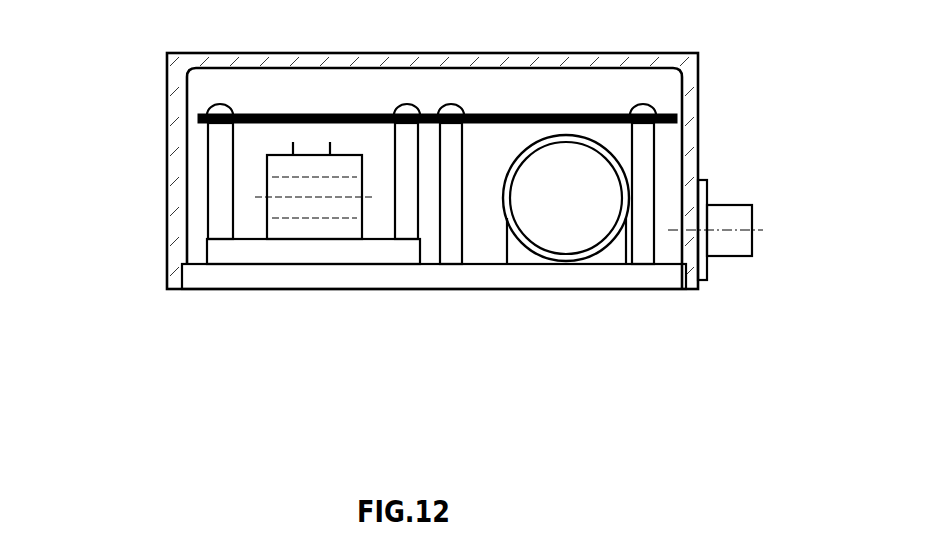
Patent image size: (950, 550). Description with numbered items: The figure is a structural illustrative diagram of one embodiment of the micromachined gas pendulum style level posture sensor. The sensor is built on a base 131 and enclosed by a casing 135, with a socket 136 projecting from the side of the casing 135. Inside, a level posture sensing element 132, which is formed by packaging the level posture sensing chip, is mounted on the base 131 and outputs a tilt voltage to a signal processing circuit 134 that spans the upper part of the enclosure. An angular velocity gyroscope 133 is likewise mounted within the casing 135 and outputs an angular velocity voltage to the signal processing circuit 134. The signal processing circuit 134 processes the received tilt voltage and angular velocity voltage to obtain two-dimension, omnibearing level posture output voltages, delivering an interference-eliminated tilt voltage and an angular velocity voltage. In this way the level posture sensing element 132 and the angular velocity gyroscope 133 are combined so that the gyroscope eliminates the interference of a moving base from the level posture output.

The base 131 is at (210, 278).
The level posture sensing element 132 is at (275, 177).
The angular velocity gyroscope 133 is at (600, 182).
The signal processing circuit 134 is at (612, 115).
The casing 135 is at (180, 72).
The socket 136 is at (726, 218).